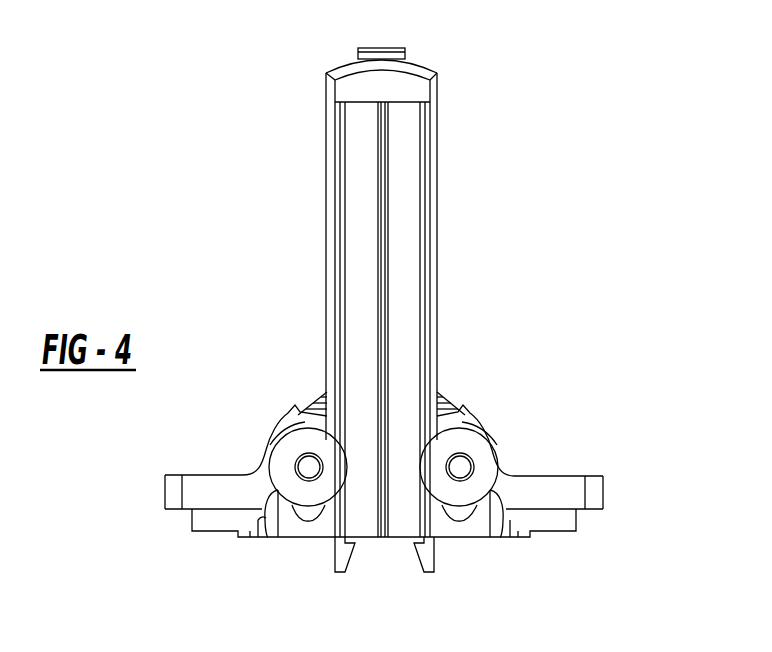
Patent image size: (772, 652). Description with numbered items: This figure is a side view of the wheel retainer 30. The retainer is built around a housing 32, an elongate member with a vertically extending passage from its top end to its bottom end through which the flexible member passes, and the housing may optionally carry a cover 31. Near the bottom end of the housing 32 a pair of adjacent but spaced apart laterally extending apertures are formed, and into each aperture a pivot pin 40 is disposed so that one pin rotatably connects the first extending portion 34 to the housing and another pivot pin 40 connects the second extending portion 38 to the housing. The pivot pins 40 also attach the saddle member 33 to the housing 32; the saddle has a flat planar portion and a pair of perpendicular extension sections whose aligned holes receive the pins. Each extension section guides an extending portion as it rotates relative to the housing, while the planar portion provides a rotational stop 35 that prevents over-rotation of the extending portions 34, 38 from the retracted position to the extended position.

The wheel retainer 30 is at (363, 292).
The cover 31 is at (437, 167).
The housing 32 is at (430, 247).
The saddle member 33 is at (317, 537).
The first extending portion 34 is at (560, 477).
The rotational stop 35 is at (247, 537).
The second extending portion 38 is at (203, 474).
The pivot pin 40 is at (310, 467).